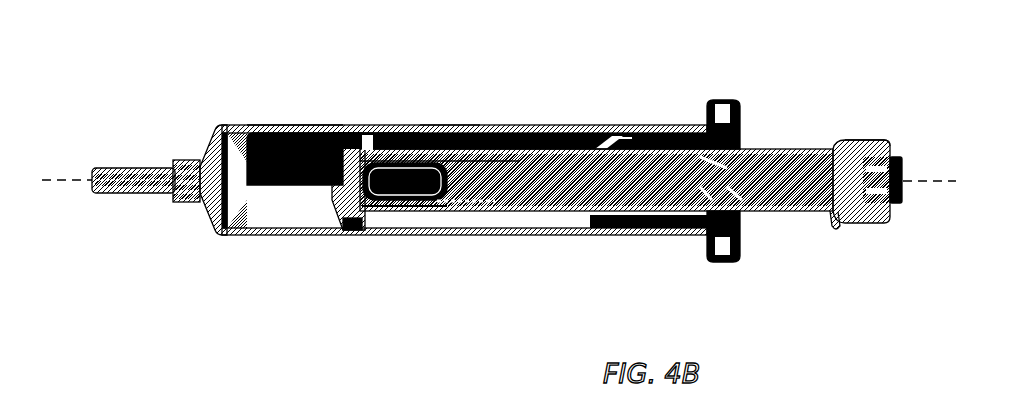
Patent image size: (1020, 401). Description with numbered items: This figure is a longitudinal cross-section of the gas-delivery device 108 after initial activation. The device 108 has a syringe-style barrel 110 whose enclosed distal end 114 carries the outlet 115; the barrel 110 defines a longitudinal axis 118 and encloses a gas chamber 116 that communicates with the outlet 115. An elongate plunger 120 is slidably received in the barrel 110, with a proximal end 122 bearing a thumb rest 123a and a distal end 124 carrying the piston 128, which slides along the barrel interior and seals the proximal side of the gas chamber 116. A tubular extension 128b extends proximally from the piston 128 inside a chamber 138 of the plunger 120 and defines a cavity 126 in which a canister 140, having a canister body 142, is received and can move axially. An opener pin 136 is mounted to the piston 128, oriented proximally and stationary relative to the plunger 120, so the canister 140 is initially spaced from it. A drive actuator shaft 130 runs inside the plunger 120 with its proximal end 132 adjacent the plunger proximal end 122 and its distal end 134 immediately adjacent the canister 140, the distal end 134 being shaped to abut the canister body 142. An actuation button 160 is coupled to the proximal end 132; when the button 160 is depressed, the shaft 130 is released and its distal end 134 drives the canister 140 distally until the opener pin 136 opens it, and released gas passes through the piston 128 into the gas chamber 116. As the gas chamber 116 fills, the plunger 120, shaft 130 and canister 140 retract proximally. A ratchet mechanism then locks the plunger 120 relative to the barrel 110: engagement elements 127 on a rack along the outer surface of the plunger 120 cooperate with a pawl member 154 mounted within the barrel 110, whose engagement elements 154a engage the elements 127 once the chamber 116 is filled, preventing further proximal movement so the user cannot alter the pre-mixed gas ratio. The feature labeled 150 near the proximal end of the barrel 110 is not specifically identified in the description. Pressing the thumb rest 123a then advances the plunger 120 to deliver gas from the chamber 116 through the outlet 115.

The device 108 is at (725, 80).
The barrel 110 is at (511, 236).
The distal end 114 is at (233, 238).
The outlet 115 is at (168, 166).
The gas chamber 116 is at (295, 207).
The longitudinal axis 118 is at (65, 181).
The plunger 120 is at (556, 211).
The plunger proximal end 122 is at (830, 214).
The thumb rest 123a is at (892, 148).
The plunger distal end 124 is at (380, 212).
The cavity 126 is at (423, 212).
The ratchet or engagement elements 127 is at (555, 132).
The piston 128 is at (310, 128).
The tubular extension 128b is at (390, 128).
The drive actuator shaft 130 is at (650, 222).
The proximal end of drive actuator shaft 132 is at (848, 140).
The distal end of drive actuator shaft 134 is at (515, 128).
The opener pin 136 is at (341, 232).
The chamber 138 is at (463, 128).
The canister 140 is at (428, 128).
The canister body 142 is at (463, 212).
The finger flange 150 is at (733, 262).
The pawl member 154 is at (612, 135).
The ratchet or engagement elements 154a is at (582, 136).
The actuation button 160 is at (908, 206).